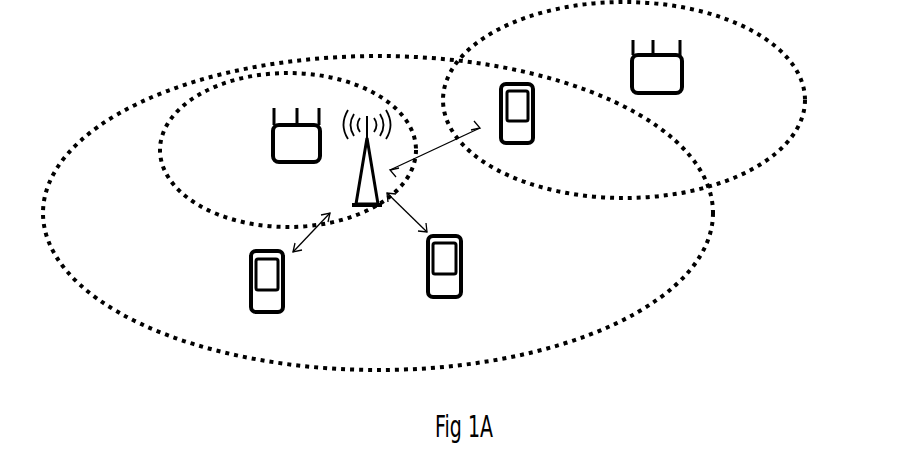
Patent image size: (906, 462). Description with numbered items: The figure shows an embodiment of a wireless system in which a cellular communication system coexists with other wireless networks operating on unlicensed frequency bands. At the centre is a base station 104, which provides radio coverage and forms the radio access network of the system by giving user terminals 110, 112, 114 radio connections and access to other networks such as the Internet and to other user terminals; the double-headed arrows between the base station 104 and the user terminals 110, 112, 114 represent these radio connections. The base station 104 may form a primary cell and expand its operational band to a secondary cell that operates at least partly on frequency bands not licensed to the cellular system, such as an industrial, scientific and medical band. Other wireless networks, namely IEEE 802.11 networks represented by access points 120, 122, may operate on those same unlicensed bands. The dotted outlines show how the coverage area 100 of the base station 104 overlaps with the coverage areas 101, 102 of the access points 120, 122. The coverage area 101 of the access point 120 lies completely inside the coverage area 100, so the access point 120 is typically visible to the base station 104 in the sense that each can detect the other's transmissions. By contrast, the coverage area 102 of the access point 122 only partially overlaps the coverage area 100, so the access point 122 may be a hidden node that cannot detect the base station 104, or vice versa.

The coverage area 100 is at (107, 214).
The coverage area 101 is at (217, 162).
The coverage area 102 is at (777, 118).
The base station 104 is at (357, 182).
The user terminal 110 is at (250, 251).
The user terminal 112 is at (428, 237).
The user terminal 114 is at (502, 83).
The access point 120 is at (272, 138).
The access point 122 is at (632, 69).